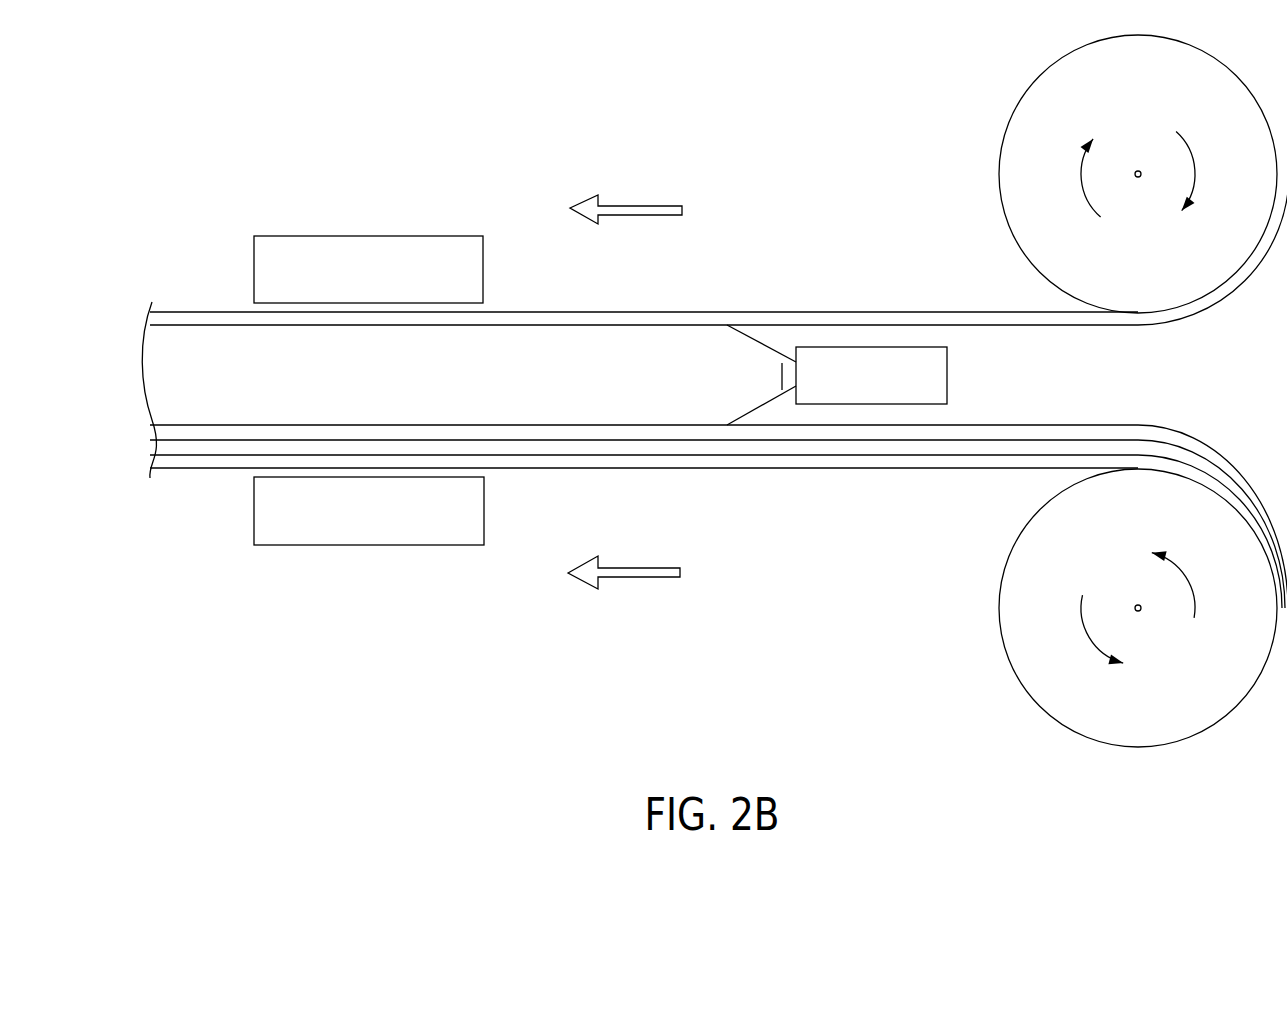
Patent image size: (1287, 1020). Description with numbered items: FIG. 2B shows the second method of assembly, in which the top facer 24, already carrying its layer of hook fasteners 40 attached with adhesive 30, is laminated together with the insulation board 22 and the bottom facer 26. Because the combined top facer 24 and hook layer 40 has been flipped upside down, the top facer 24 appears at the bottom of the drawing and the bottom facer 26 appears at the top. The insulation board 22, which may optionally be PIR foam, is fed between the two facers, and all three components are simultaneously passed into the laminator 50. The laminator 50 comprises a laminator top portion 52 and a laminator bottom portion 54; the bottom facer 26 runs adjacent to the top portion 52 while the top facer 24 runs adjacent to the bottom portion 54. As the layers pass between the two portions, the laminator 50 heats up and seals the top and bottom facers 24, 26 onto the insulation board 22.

The laminator 50 is at (246, 154).
The laminator top portion 52 is at (372, 236).
The laminator bottom portion 54 is at (372, 545).
The insulation board 22 is at (568, 357).
The bottom facer 26 is at (811, 312).
The top facer 24 is at (977, 424).
The hot melt adhesive 30 is at (1025, 448).
The layer of hook fasteners 40 is at (917, 460).